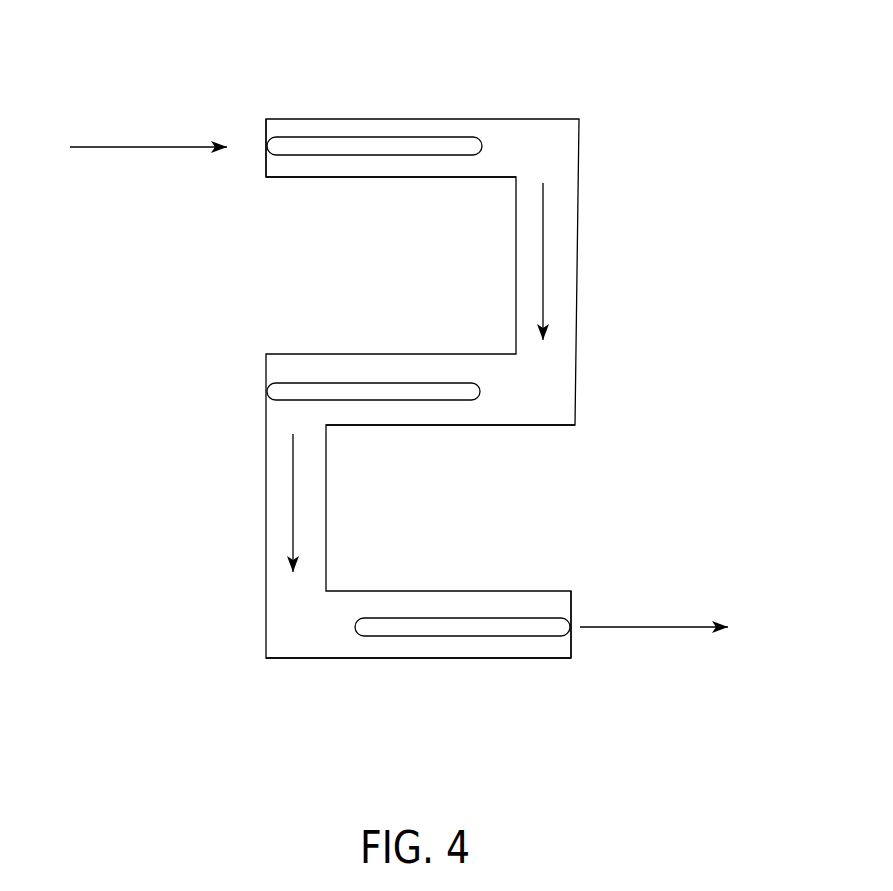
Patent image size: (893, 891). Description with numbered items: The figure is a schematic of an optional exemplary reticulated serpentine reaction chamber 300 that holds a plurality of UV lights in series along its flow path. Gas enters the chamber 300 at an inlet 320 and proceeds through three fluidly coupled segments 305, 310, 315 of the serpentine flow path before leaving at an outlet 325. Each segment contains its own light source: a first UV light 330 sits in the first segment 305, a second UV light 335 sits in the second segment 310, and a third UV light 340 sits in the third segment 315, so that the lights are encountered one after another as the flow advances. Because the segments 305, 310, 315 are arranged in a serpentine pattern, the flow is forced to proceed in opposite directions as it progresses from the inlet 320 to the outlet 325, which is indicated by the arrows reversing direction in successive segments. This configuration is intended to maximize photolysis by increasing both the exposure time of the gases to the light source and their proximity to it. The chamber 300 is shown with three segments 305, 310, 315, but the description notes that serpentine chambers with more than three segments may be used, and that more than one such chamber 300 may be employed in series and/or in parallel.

The reticulated serpentine reaction chamber 300 is at (599, 305).
The segment 305 is at (393, 177).
The segment 310 is at (465, 425).
The segment 315 is at (433, 658).
The inlet 320 is at (262, 127).
The outlet 325 is at (572, 642).
The UV light 330 is at (415, 148).
The UV light 335 is at (390, 390).
The UV light 340 is at (465, 622).